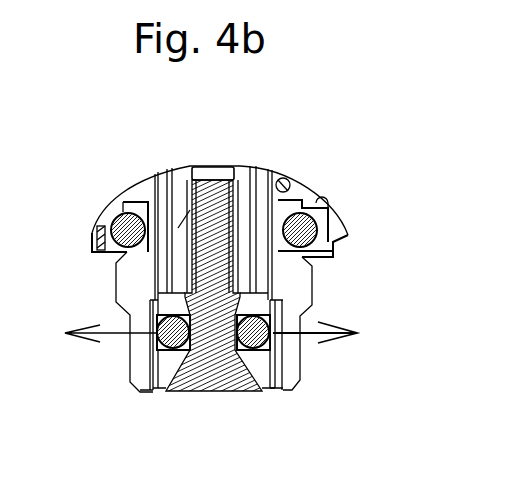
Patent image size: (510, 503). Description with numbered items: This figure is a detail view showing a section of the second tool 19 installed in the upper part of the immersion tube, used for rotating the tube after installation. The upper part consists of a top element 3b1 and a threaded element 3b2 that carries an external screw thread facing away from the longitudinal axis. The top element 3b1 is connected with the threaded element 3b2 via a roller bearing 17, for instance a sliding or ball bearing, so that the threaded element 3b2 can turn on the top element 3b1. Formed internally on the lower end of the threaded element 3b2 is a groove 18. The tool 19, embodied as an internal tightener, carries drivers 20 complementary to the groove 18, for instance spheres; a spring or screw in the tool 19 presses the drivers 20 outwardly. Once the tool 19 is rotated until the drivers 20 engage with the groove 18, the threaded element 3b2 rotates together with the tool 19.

The top element 3b1 is at (305, 190).
The threaded element 3b2 is at (290, 275).
The roller bearing 17 is at (335, 243).
The groove 18 is at (273, 362).
The second tool 19 is at (220, 370).
The drivers 20 is at (272, 389).